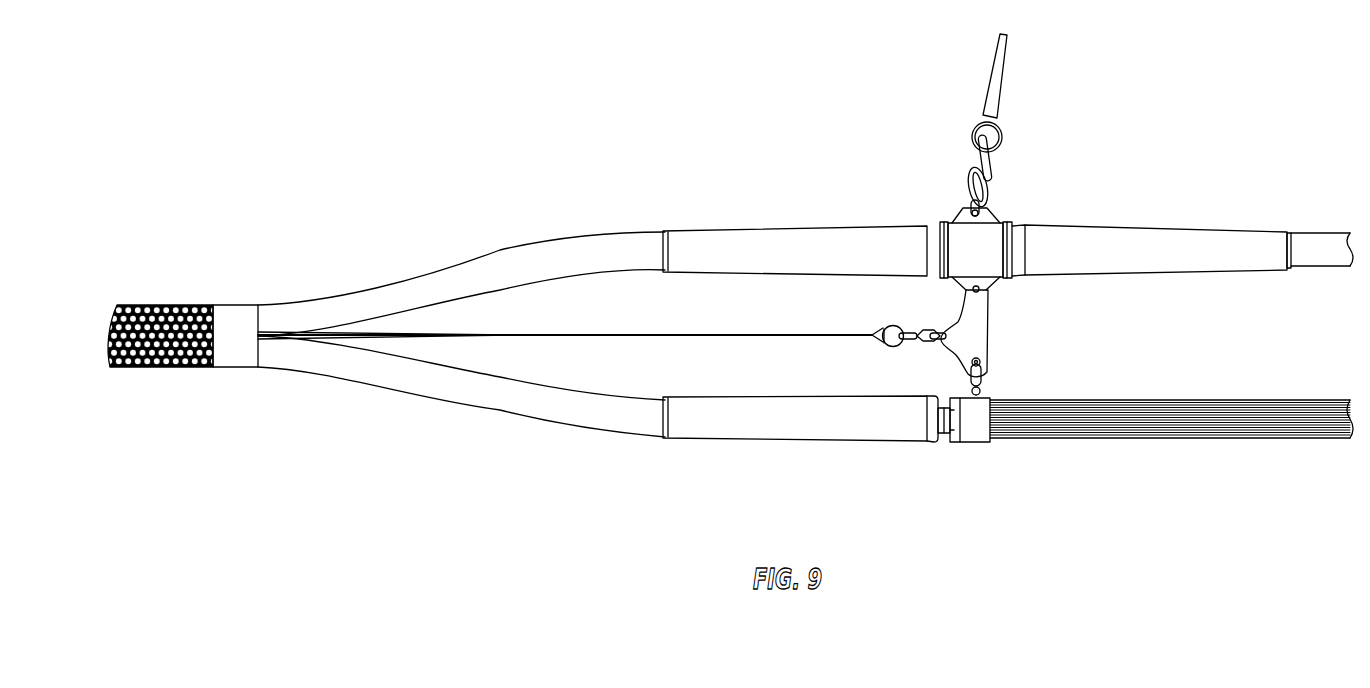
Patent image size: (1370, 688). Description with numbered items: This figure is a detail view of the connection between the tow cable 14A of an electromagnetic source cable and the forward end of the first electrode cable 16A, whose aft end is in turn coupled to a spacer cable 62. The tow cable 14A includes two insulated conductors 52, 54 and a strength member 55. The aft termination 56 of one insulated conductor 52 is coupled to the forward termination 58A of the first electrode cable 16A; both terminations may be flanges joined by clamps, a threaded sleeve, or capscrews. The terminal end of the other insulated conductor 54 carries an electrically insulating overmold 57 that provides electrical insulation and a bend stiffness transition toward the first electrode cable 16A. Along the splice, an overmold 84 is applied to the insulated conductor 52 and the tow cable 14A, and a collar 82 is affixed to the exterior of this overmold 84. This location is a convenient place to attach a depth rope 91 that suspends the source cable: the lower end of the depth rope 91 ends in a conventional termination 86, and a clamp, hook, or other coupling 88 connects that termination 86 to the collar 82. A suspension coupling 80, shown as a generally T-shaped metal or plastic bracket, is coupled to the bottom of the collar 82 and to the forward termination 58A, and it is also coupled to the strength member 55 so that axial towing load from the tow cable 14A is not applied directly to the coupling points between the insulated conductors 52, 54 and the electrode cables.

The tow cable 14A is at (208, 305).
The insulated conductor 52 is at (658, 232).
The insulated conductor 54 is at (658, 438).
The strength member 55 is at (640, 337).
The overmold 84 is at (918, 225).
The collar 82 is at (990, 222).
The spacer cable 62 is at (1322, 232).
The suspension coupling 80 is at (990, 330).
The electrically insulating overmold 57 is at (905, 441).
The aft termination 56 is at (935, 443).
The forward termination 58A is at (978, 442).
The first electrode cable 16A is at (1195, 438).
The depth rope 91 is at (1002, 98).
The termination 86 is at (980, 107).
The coupling 88 is at (996, 167).